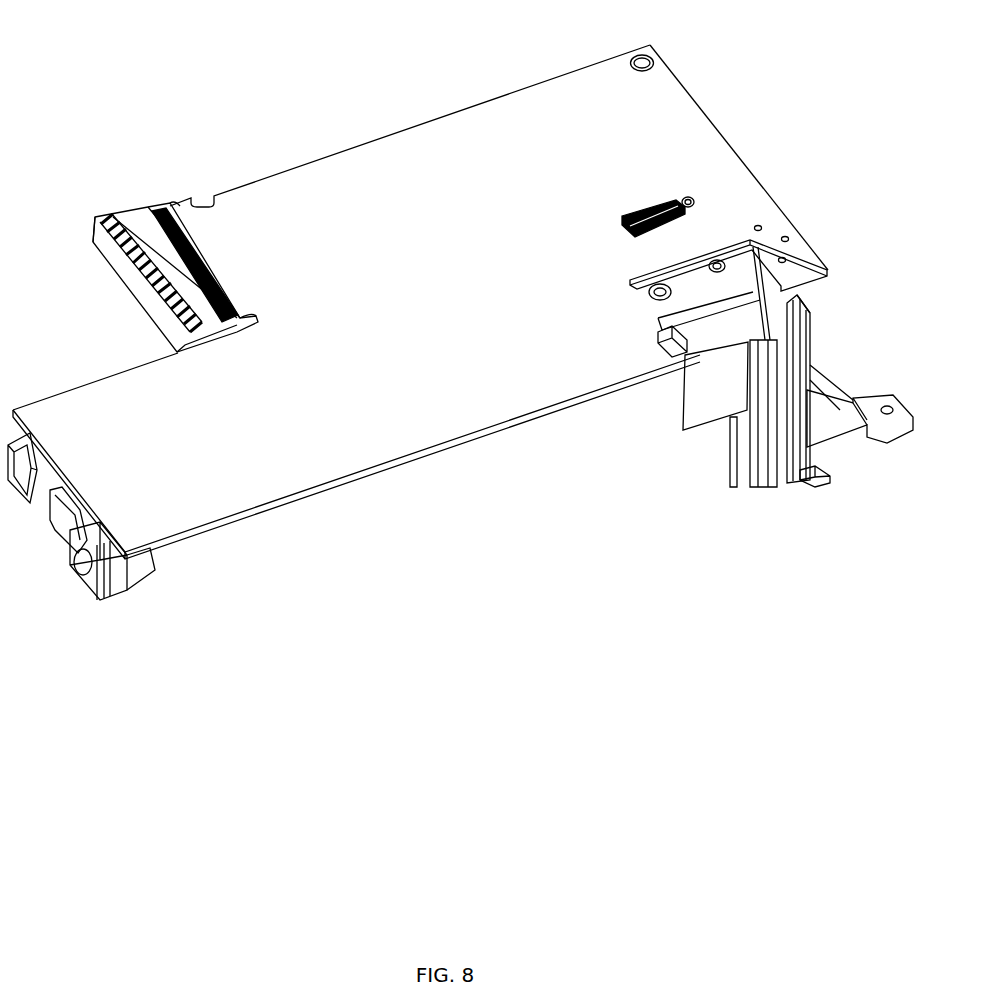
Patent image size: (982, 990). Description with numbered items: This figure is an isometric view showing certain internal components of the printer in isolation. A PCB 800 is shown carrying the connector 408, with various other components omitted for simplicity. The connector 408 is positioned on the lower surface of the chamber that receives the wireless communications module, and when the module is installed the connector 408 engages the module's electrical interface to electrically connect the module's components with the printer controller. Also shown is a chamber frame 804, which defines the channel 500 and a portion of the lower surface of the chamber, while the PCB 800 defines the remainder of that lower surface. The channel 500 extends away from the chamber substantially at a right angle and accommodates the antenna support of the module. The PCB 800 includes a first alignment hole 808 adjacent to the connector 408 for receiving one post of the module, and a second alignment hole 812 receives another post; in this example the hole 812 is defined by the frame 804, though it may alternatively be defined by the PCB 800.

The PCB 800 is at (462, 158).
The connector 408 is at (648, 205).
The first alignment hole 808 is at (692, 198).
The second alignment hole 812 is at (648, 296).
The channel 500 is at (815, 336).
The chamber frame 804 is at (817, 490).